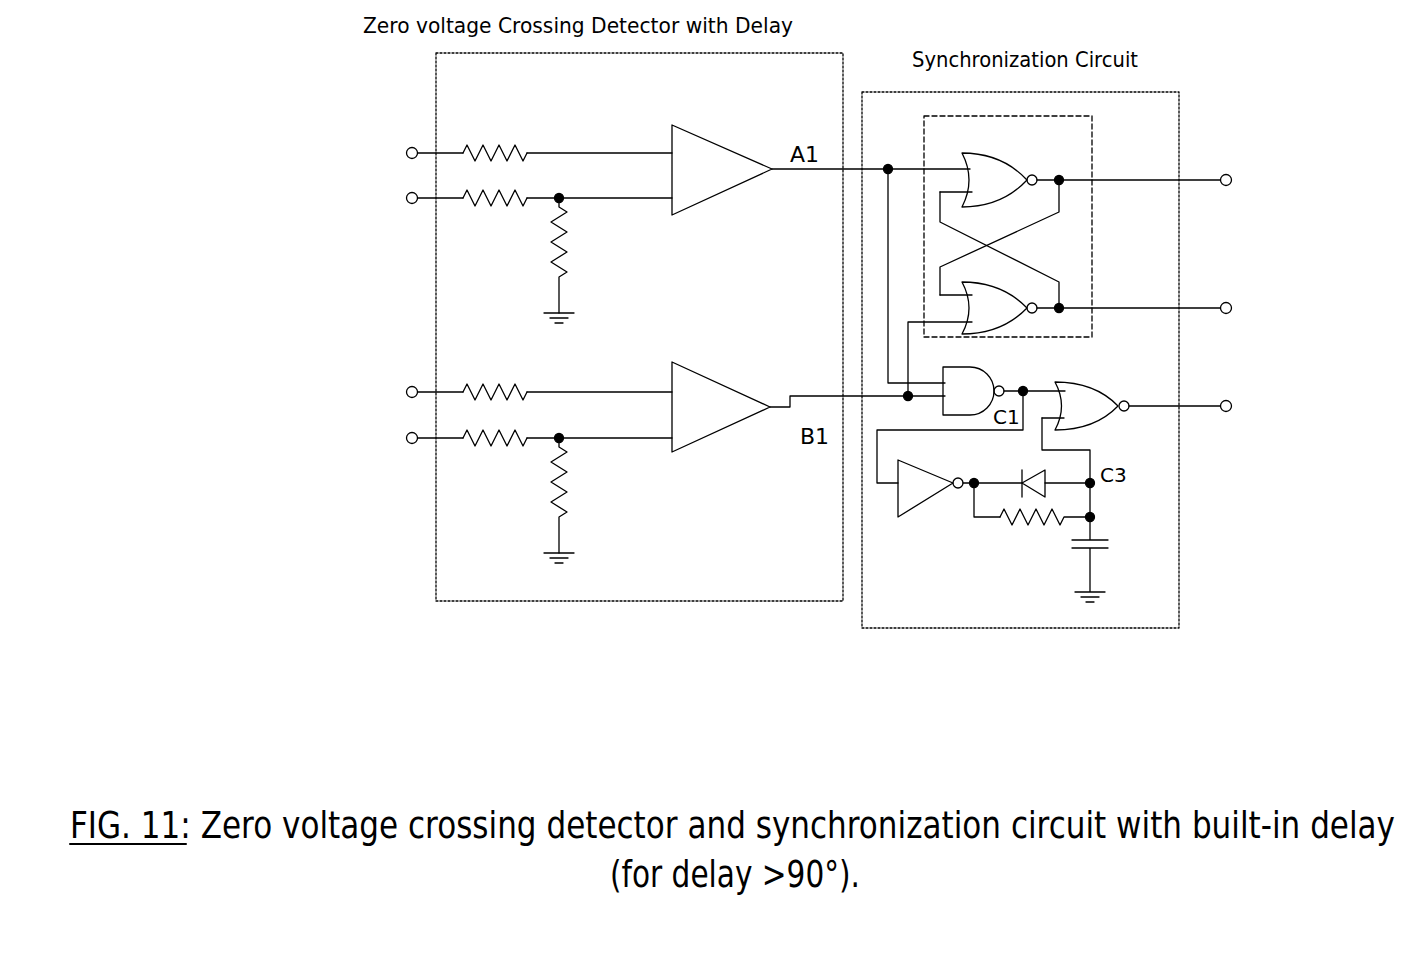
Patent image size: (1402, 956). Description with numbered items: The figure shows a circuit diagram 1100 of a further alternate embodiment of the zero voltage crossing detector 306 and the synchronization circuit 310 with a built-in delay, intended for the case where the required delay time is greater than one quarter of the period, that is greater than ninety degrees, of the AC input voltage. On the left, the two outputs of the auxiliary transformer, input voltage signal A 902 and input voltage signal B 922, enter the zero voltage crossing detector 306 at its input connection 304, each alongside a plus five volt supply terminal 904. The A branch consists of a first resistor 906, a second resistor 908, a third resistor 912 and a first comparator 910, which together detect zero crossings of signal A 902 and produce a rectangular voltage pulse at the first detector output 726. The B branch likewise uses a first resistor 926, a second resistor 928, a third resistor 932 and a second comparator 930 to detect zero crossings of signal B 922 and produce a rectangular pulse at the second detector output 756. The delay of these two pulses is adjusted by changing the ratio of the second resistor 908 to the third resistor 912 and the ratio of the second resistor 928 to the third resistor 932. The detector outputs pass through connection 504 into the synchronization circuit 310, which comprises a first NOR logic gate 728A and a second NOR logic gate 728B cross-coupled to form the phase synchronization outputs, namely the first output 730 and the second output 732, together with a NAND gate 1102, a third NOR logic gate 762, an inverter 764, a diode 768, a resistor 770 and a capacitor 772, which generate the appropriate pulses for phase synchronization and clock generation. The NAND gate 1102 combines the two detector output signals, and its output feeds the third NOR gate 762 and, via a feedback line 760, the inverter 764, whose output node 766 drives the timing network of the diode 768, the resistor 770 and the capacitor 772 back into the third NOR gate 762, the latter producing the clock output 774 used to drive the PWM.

The circuit diagram 1100 is at (200, 114).
The connection of auxiliary transformer outputs to zero crossing detector 304 is at (421, 636).
The zero crossing detector circuit 306 is at (667, 601).
The connection of delay circuit output to synchronization circuit 504 is at (855, 636).
The synchronization circuit 310 is at (978, 628).
The input voltage signal A 902 is at (432, 152).
The +5V supply terminal 904 is at (432, 200).
The resistor RA1 906 is at (511, 152).
The resistor RA2 908 is at (511, 198).
The comparator CA 910 is at (725, 146).
The resistor RA3 912 is at (571, 237).
The input voltage signal B 922 is at (432, 392).
The resistor RB1 926 is at (511, 392).
The resistor RB2 928 is at (511, 438).
The comparator CB 930 is at (725, 386).
The resistor RB3 932 is at (571, 477).
The output A1 726 is at (874, 168).
The NOR logic gate GA2 728A is at (1015, 155).
The NOR logic gate GB2 728B is at (1025, 284).
The output terminal A' 730 is at (1180, 180).
The output terminal B' 732 is at (1184, 308).
The output B1 756 is at (782, 396).
The NAND gate GC1 1102 is at (997, 378).
The feedback line 760 is at (937, 430).
The NOR logic gate GC2 762 is at (1109, 386).
The inverter GC3 764 is at (918, 505).
The node C2 766 is at (989, 518).
The diode DC 768 is at (1073, 490).
The resistor RC 770 is at (1066, 519).
The capacitor CC 772 is at (1098, 550).
The clock output terminal 774 is at (1195, 406).